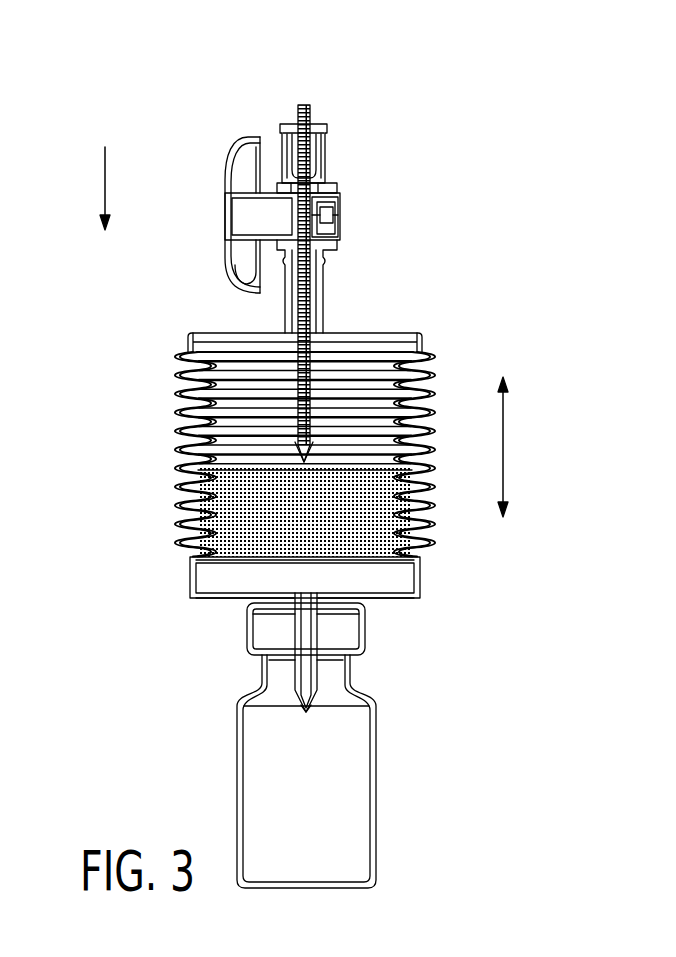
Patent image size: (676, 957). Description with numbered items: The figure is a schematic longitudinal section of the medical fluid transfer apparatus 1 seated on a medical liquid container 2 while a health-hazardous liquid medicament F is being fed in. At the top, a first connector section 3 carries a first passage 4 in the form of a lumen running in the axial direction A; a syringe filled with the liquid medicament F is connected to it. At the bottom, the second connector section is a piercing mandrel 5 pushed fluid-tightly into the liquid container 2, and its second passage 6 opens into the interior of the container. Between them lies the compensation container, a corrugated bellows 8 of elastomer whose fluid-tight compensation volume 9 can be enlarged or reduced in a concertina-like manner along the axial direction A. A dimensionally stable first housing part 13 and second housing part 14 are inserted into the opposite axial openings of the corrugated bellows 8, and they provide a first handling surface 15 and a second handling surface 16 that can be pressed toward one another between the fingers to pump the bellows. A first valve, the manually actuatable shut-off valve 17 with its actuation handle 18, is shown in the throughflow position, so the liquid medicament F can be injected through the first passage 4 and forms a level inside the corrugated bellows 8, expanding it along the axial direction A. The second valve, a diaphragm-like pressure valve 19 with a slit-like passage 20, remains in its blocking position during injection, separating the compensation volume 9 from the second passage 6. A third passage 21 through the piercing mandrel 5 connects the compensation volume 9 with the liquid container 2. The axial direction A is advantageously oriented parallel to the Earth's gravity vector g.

The medical fluid transfer apparatus 1 is at (393, 117).
The medical liquid container 2 is at (388, 815).
The first connector section 3 is at (320, 160).
The first passage 4 is at (297, 136).
The second connector section 5 is at (265, 670).
The second passage 6 is at (303, 710).
The compensation container 8 is at (460, 390).
The compensation volume 9 is at (200, 392).
The first housing part 13 is at (422, 335).
The second housing part 14 is at (186, 600).
The first handling surface 15 is at (392, 331).
The second handling surface 16 is at (212, 600).
The first valve 17 is at (370, 216).
The actuation handle 18 is at (229, 168).
The second valve 19 is at (196, 543).
The slit-like passage 20 is at (302, 563).
The third passage 21 is at (309, 708).
The liquid medicament F is at (190, 517).
The axial direction A is at (505, 451).
The Earth's gravity vector g is at (107, 165).